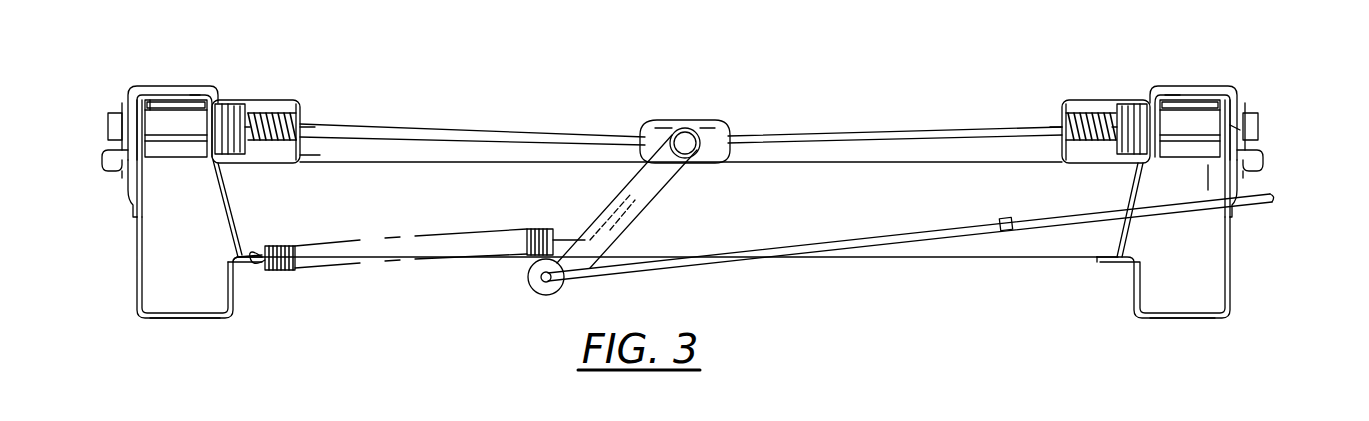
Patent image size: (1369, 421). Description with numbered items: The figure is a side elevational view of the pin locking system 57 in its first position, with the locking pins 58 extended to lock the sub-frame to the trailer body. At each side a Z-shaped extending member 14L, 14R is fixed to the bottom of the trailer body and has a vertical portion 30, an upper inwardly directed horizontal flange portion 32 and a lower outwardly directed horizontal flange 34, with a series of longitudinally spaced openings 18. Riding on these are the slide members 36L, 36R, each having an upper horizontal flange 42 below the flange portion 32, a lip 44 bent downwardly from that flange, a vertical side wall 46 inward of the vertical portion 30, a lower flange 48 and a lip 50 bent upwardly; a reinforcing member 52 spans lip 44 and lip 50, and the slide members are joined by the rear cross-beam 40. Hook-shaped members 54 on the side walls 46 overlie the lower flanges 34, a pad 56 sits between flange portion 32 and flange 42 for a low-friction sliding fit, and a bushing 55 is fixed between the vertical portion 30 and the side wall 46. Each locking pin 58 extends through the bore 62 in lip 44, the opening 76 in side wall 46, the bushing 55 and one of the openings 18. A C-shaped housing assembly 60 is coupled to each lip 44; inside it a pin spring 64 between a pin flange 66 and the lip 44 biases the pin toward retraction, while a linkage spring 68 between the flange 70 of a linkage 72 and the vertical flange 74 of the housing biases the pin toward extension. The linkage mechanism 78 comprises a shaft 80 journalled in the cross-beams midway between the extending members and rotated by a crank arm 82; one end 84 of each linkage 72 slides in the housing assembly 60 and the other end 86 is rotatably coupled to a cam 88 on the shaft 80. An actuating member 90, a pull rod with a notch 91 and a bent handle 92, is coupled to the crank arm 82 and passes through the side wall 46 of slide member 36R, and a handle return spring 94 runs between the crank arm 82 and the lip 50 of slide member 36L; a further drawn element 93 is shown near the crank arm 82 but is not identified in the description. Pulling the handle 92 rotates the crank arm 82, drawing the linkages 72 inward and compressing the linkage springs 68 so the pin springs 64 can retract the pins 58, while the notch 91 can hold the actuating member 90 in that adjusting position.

The extending member 14L is at (136, 84).
The extending member 14R is at (1240, 90).
The openings 18 is at (122, 103).
The vertical portion 30 is at (128, 95).
The upper horizontal flange portion 32 is at (205, 98).
The lower horizontal flange 34 is at (132, 193).
The slide member 36L is at (133, 284).
The slide member 36R is at (1236, 274).
The rear cross-beam 40 is at (1040, 258).
The upper horizontal flange 42 is at (165, 100).
The lip 44 is at (255, 100).
The side wall 46 is at (137, 242).
The lower flange 48 is at (195, 318).
The lip 50 is at (233, 300).
The reinforcing member 52 is at (236, 215).
The hook-shaped members 54 is at (102, 165).
The bushing 55 is at (152, 98).
The pad 56 is at (195, 90).
The pin locking system 57 is at (530, 70).
The locking pin 58 is at (182, 142).
The housing assembly 60 is at (306, 110).
The bore 62 is at (232, 100).
The pin spring 64 is at (223, 160).
The pin flange 66 is at (265, 112).
The linkage spring 68 is at (278, 150).
The flange 70 is at (298, 104).
The linkage 72 is at (538, 127).
The vertical flange 74 is at (300, 160).
The opening 76 is at (150, 148).
The linkage mechanism 78 is at (694, 120).
The shaft 80 is at (692, 158).
The crank arm 82 is at (607, 200).
The one end 84 is at (312, 155).
The other end 86 is at (655, 128).
The cam 88 is at (728, 126).
The actuating member 90 is at (778, 258).
The notch 91 is at (1000, 218).
The handle 92 is at (411, 248).
The lever spring 93 is at (556, 242).
The handle return spring 94 is at (288, 270).